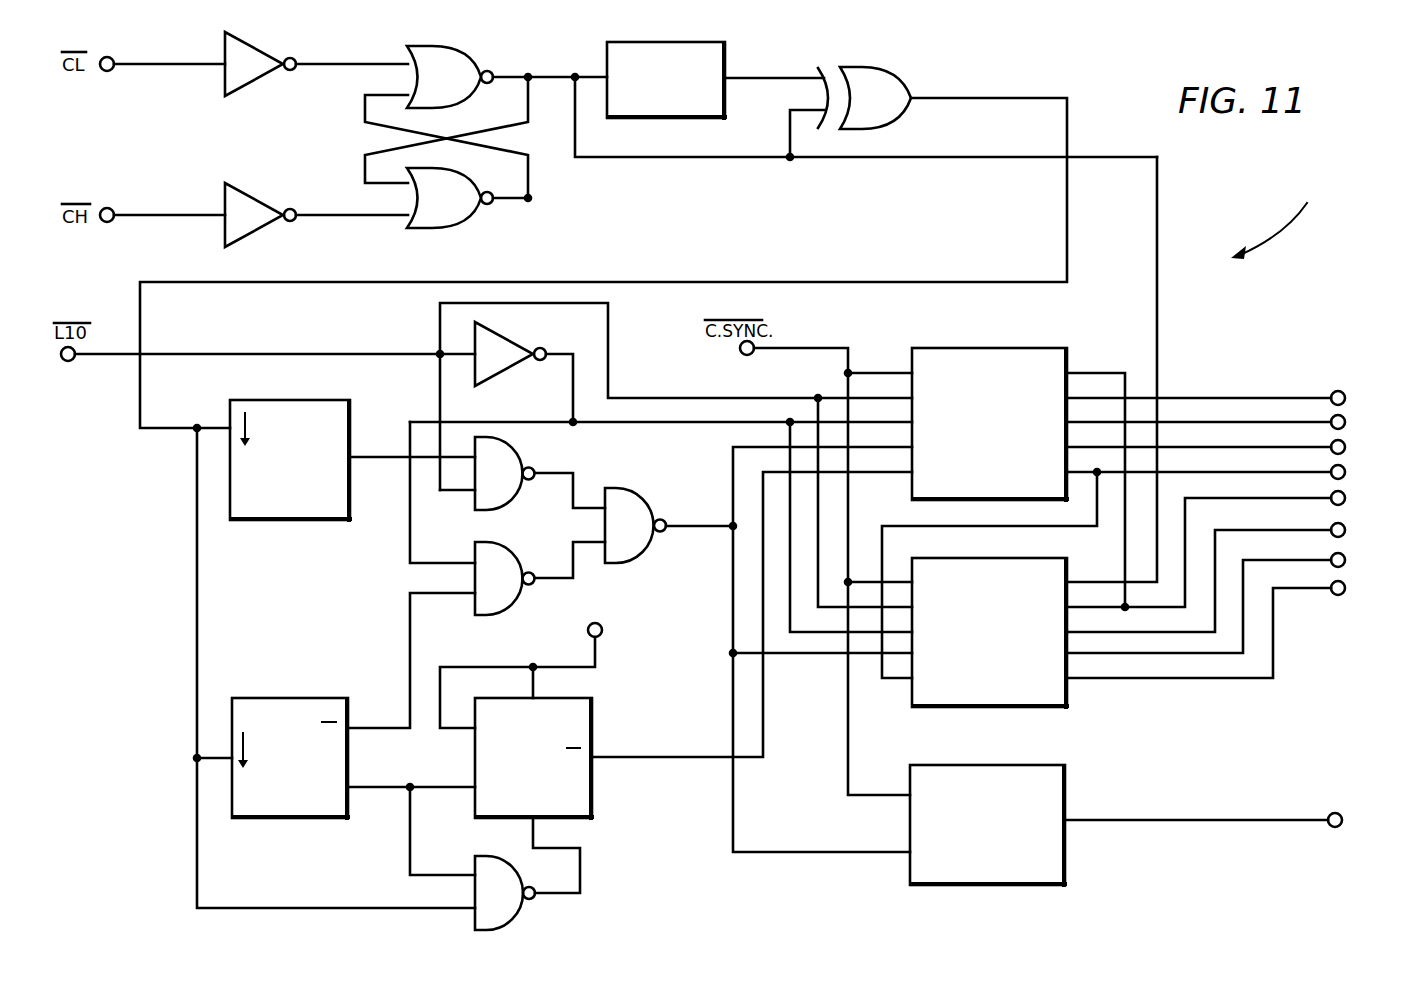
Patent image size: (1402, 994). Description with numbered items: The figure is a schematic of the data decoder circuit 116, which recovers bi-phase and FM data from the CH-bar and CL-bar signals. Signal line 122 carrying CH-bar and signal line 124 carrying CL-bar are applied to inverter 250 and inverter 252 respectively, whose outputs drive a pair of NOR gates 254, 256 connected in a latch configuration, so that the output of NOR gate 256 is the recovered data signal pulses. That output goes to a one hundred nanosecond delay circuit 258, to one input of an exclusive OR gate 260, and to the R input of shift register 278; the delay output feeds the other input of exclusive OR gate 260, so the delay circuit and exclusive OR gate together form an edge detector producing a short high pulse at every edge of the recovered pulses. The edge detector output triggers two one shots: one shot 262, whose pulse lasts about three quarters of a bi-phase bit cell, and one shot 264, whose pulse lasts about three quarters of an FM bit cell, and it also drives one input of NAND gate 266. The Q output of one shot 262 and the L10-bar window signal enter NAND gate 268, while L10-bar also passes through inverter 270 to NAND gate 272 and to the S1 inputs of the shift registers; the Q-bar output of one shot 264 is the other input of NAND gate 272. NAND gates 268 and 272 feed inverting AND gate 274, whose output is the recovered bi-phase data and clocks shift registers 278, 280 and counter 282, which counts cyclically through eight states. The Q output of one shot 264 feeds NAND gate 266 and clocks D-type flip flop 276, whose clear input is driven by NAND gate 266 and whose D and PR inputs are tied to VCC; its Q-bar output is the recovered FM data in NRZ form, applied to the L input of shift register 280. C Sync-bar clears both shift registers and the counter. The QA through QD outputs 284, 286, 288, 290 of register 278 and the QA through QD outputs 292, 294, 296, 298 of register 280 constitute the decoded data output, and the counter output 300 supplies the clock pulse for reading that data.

The decoder circuit 116 is at (1282, 218).
The signal line 122 is at (165, 215).
The signal line 124 is at (163, 64).
The inverter 250 is at (252, 196).
The inverter 252 is at (252, 45).
The NOR gate 254 is at (457, 226).
The NOR gate 256 is at (450, 47).
The delay circuit 258 is at (677, 42).
The exclusive OR gate 260 is at (877, 68).
The one shot 262 is at (307, 399).
The one shot 264 is at (297, 698).
The NAND gate 266 is at (524, 897).
The NAND gate 268 is at (510, 446).
The inverter 270 is at (503, 335).
The NAND gate 272 is at (503, 548).
The inverting AND gate 274 is at (640, 492).
The D-type flip flop 276 is at (592, 711).
The shift register 278 is at (1003, 558).
The shift register 280 is at (1003, 348).
The counter 282 is at (1003, 765).
The QA output 284 is at (1345, 590).
The QB output 286 is at (1345, 562).
The QC output 288 is at (1345, 532).
The QD output 290 is at (1345, 500).
The QA output 292 is at (1345, 474).
The QB output 294 is at (1345, 449).
The QC output 296 is at (1345, 424).
The QD output 298 is at (1345, 400).
The counter output 300 is at (1195, 820).